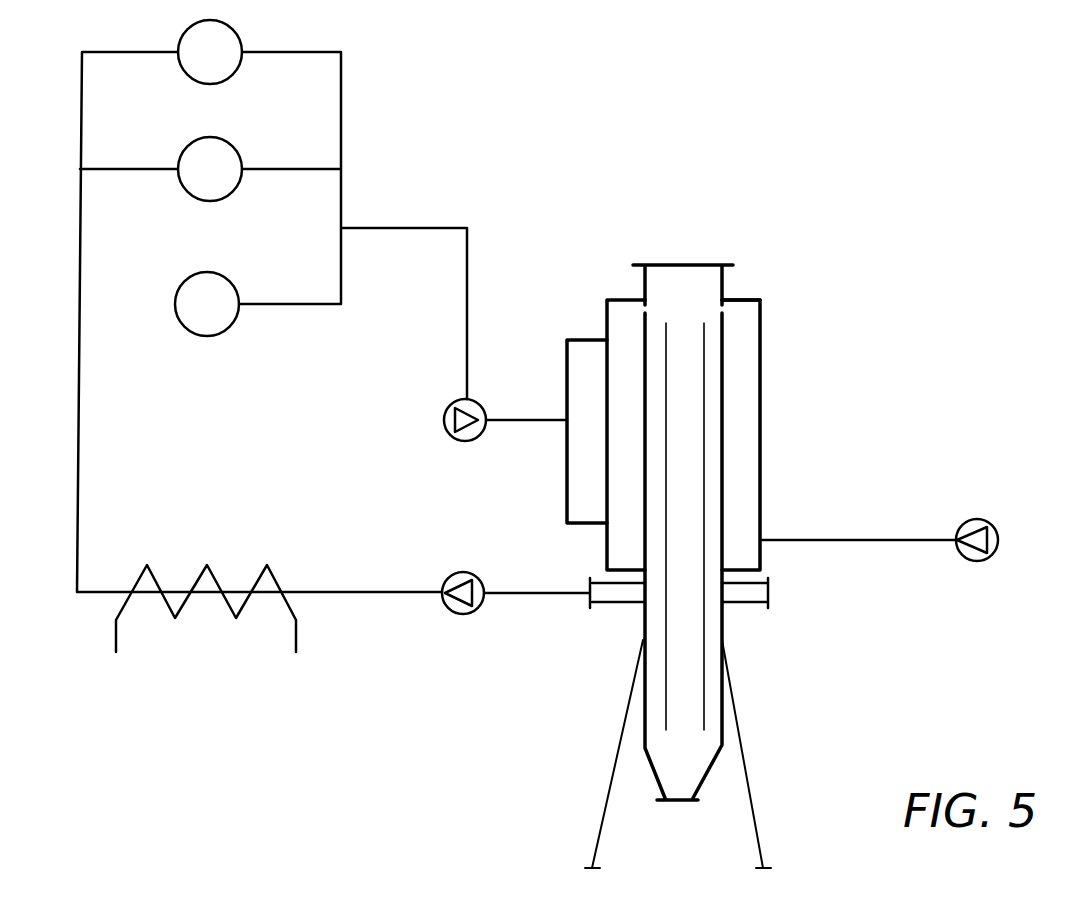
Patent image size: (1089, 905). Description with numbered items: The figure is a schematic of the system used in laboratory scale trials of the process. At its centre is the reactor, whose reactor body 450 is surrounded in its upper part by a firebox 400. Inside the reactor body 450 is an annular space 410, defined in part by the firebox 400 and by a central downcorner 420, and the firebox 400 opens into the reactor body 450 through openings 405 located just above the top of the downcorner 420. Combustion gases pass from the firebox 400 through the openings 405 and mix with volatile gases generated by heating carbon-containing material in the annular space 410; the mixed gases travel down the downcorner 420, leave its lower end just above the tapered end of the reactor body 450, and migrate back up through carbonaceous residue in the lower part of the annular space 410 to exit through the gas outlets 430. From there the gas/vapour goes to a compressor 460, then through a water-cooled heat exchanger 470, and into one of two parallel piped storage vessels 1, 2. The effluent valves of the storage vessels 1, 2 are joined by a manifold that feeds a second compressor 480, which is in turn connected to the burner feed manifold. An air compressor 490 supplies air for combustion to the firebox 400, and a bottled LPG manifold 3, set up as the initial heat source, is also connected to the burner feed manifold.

The storage vessel 1 is at (210, 52).
The storage vessel 2 is at (210, 169).
The bottled LPG manifold 3 is at (207, 304).
The firebox 400 is at (748, 350).
The openings 405 is at (730, 308).
The annular space 410 is at (717, 437).
The downcorner 420 is at (688, 652).
The gas outlets 430 is at (772, 588).
The reactor body 450 is at (643, 355).
The compressor 460 is at (467, 615).
The water-cooled heat exchanger 470 is at (296, 628).
The second compressor 480 is at (445, 410).
The air compressor 490 is at (978, 518).